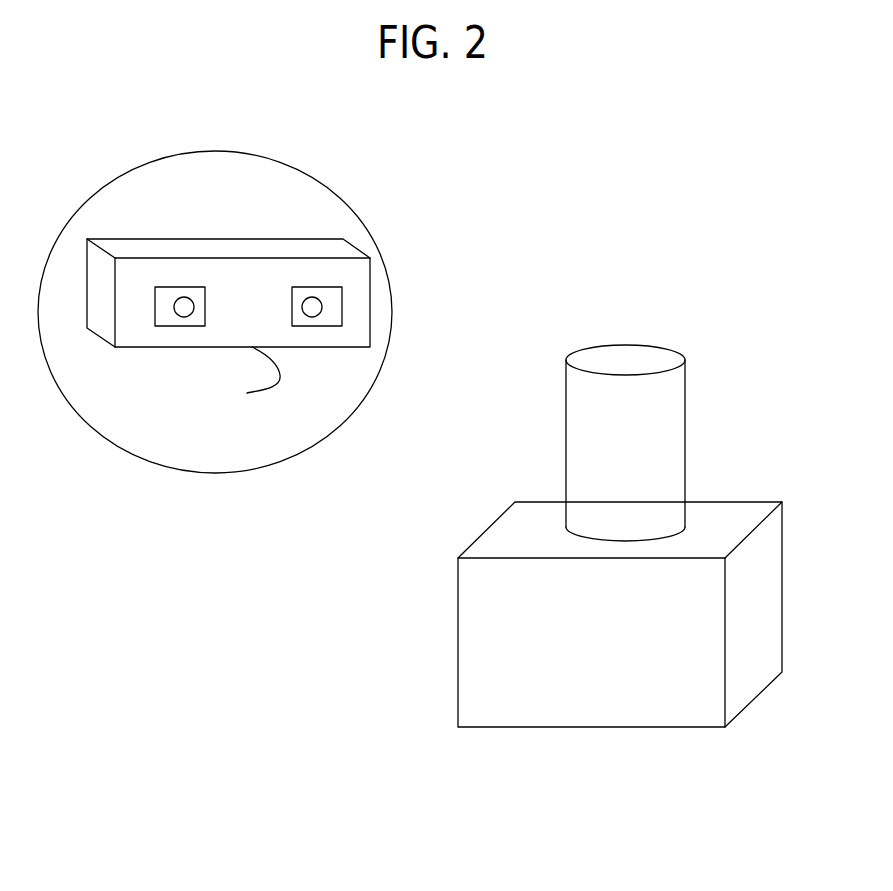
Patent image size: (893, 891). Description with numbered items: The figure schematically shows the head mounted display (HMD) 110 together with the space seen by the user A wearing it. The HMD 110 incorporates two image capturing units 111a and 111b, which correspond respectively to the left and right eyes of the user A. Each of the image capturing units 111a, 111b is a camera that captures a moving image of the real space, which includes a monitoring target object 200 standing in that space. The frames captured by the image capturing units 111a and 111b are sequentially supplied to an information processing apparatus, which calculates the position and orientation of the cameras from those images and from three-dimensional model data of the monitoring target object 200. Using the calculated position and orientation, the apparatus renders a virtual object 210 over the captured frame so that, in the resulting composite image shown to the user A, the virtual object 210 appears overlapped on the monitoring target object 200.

The head mounted display (HMD) 110 is at (266, 316).
The image capturing unit 111a is at (325, 327).
The image capturing unit 111b is at (184, 327).
The monitoring target object 200 is at (735, 500).
The virtual object 210 is at (630, 344).
The user A is at (333, 192).